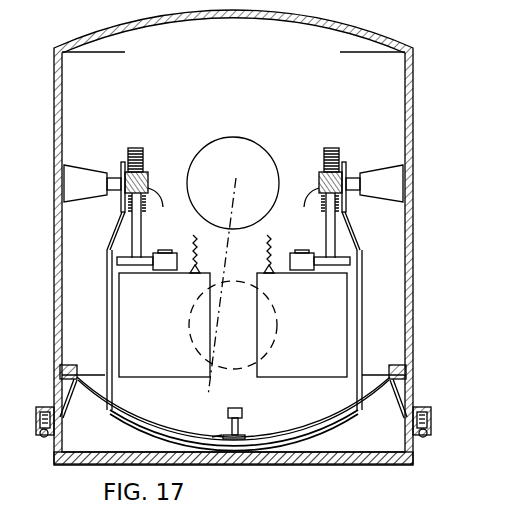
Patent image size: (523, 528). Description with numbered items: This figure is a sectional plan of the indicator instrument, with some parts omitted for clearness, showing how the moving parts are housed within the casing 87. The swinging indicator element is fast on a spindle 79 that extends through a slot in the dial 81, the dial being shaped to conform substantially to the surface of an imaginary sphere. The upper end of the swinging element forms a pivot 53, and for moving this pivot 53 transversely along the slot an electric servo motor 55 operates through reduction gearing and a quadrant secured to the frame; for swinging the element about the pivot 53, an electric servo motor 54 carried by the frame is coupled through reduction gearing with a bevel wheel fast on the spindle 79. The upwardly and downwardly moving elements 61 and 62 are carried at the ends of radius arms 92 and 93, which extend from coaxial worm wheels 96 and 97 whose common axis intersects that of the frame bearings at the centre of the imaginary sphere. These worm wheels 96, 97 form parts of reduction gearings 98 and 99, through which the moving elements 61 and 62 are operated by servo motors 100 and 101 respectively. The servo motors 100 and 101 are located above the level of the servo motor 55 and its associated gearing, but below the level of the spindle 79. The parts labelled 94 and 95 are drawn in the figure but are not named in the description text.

The pivot 53 is at (207, 441).
The electric servo motor 54 is at (219, 175).
The electric servo motor 55 is at (221, 330).
The upwardly and downwardly moving element 61 is at (231, 430).
The upwardly and downwardly moving element 62 is at (239, 439).
The spindle 79 is at (208, 298).
The dial 81 is at (139, 420).
The casing 87 is at (238, 237).
The radius arm 92 is at (94, 286).
The radius arm 93 is at (372, 286).
The diagonal brace 94 is at (233, 395).
The center post 95 is at (241, 421).
The worm wheel 96 is at (140, 195).
The worm wheel 97 is at (327, 195).
The reduction gearing 98 is at (156, 253).
The reduction gearing 99 is at (309, 253).
The servo motor 100 is at (142, 344).
The servo motor 101 is at (281, 344).